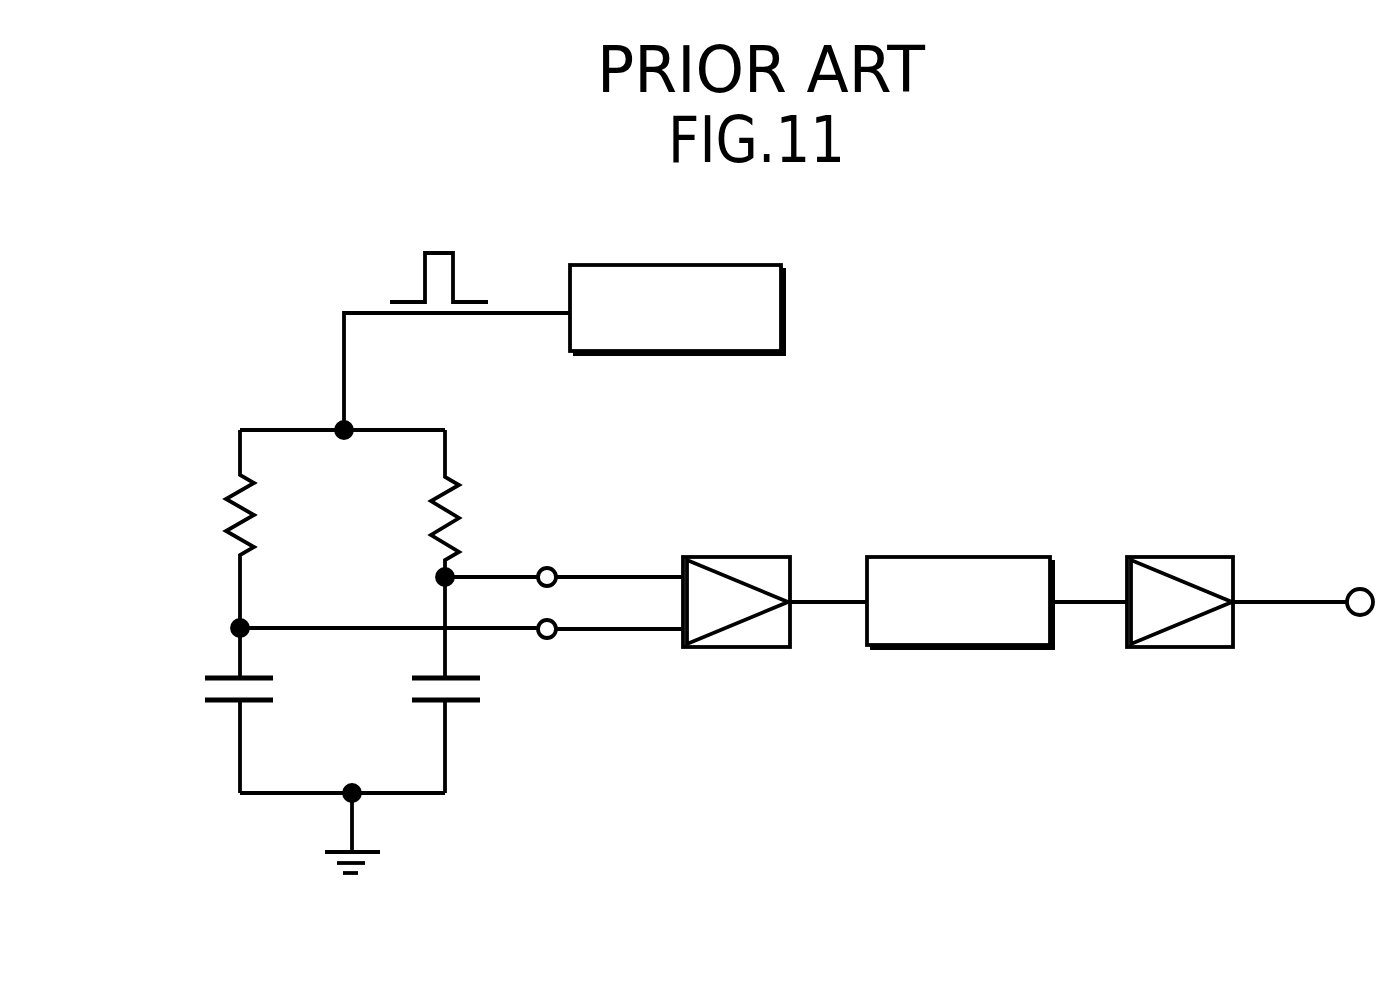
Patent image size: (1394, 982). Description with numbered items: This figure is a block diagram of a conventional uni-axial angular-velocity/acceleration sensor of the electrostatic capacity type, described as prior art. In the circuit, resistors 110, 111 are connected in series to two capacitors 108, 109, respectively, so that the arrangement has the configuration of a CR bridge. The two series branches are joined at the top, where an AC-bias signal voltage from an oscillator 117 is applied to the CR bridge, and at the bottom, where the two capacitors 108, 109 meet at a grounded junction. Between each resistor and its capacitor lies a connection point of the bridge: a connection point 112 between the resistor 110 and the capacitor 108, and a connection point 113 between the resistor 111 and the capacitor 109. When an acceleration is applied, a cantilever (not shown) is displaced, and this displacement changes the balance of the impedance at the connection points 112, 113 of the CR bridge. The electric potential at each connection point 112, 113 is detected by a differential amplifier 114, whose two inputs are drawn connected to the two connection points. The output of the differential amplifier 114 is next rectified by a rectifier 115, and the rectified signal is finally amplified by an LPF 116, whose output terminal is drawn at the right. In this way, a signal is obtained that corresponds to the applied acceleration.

The capacitor 108 is at (220, 703).
The capacitor 109 is at (465, 703).
The resistor 110 is at (227, 532).
The resistor 111 is at (453, 488).
The connection point 112 is at (240, 628).
The connection point 113 is at (452, 568).
The differential amplifier 114 is at (737, 557).
The rectifier 115 is at (928, 557).
The LPF 116 is at (1180, 557).
The oscillator 117 is at (618, 263).